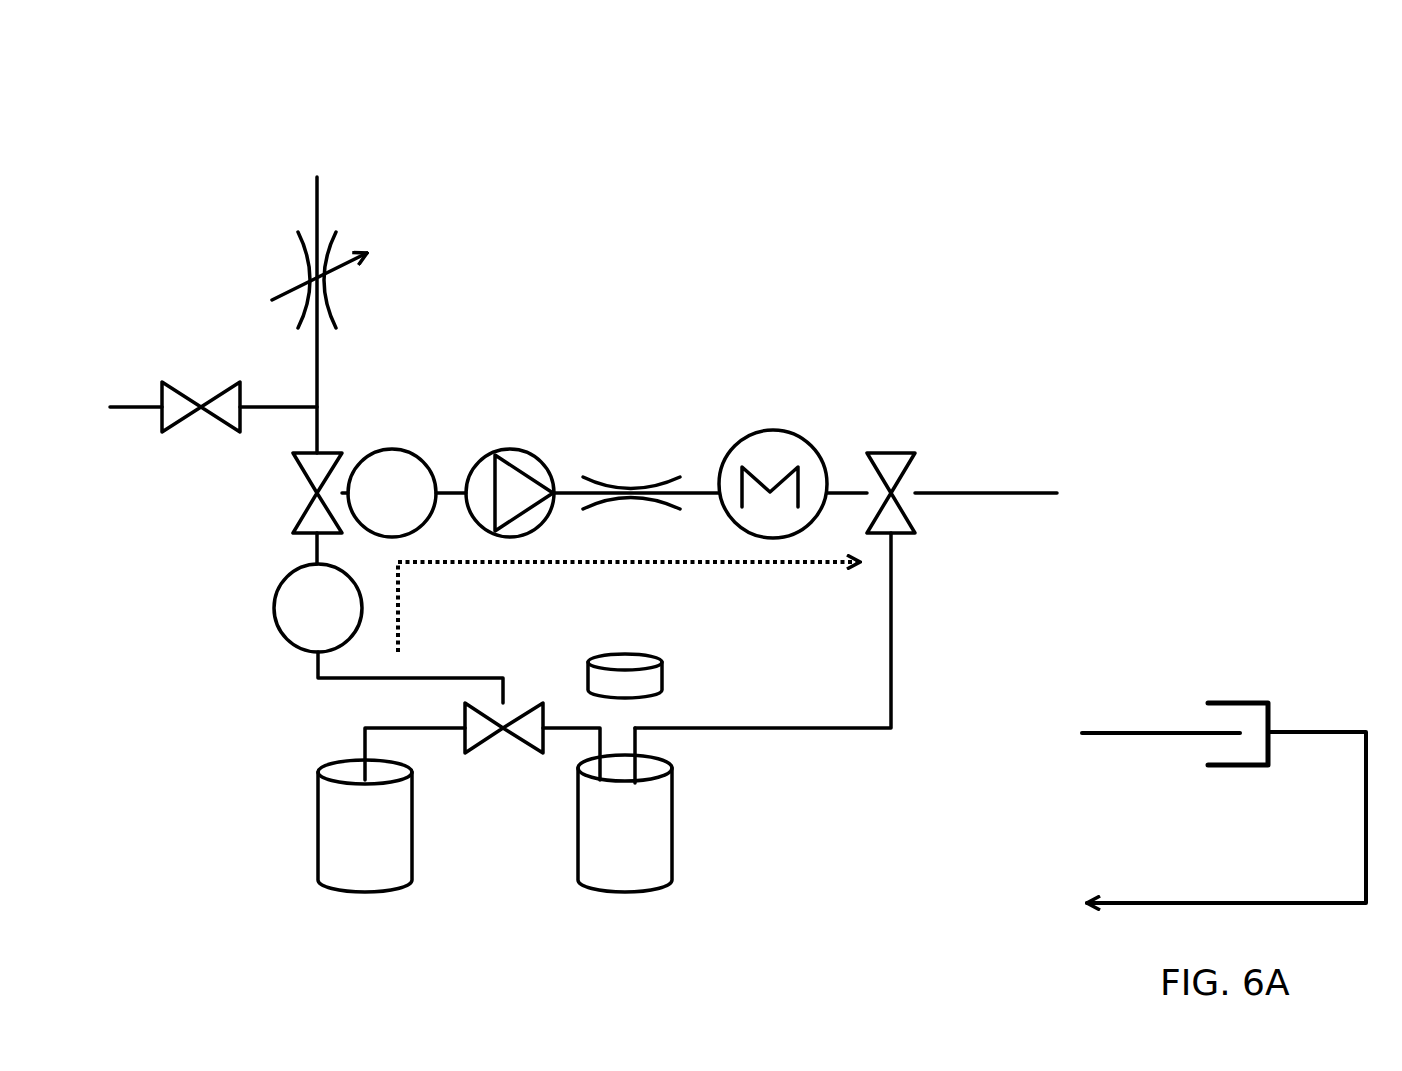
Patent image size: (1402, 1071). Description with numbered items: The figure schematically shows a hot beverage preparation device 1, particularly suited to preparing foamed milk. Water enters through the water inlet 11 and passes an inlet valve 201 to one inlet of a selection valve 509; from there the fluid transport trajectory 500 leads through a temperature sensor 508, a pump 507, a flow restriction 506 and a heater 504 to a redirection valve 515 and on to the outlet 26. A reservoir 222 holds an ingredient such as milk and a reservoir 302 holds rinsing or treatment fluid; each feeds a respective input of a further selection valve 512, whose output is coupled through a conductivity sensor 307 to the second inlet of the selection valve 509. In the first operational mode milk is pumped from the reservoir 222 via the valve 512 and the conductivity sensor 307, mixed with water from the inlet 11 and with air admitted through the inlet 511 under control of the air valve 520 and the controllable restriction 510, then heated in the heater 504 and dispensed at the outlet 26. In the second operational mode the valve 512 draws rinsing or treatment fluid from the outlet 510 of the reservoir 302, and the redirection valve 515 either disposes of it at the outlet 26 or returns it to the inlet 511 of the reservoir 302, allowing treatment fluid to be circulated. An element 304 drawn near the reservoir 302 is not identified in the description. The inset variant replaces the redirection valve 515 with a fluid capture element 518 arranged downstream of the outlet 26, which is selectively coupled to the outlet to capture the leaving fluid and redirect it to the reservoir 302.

In FIG. 6, the hot beverage preparation device 1 is at (152, 763).
In FIG. 6, the water inlet 11 is at (92, 408).
In FIG. 6, the inlet valve 201 is at (202, 433).
In FIG. 6, the outlet 26 is at (1063, 497).
In FIG. 6A, the outlet 26 is at (1216, 720).
In FIG. 6, the inlet 511 is at (317, 158).
In FIG. 6A, the inlet 511 is at (1192, 831).
In FIG. 6, the air valve 520 is at (293, 277).
In FIG. 6, the selection valve 509 is at (292, 478).
In FIG. 6, the temperature sensor 508 is at (390, 443).
In FIG. 6, the pump 507 is at (523, 443).
In FIG. 6, the flow restriction 506 is at (638, 475).
In FIG. 6, the heater 504 is at (778, 415).
In FIG. 6, the redirection valve 515 is at (927, 518).
In FIG. 6, the conductivity sensor 307 is at (270, 602).
In FIG. 6, the fluid transport trajectory 500 is at (629, 607).
In FIG. 6, the reservoir 304 is at (637, 655).
In FIG. 6, the further selection valve 512 is at (490, 740).
In FIG. 6, the outlet of reservoir 510 is at (585, 745).
In FIG. 6, the reservoir 222 is at (365, 826).
In FIG. 6, the reservoir for rinsing/treatment fluid 302 is at (625, 823).
In FIG. 6A, the fluid capture element 518 is at (1240, 697).